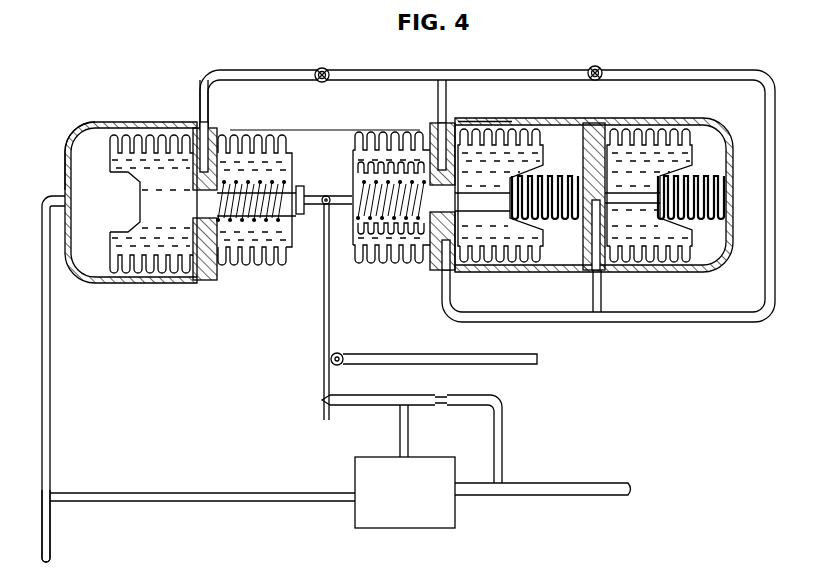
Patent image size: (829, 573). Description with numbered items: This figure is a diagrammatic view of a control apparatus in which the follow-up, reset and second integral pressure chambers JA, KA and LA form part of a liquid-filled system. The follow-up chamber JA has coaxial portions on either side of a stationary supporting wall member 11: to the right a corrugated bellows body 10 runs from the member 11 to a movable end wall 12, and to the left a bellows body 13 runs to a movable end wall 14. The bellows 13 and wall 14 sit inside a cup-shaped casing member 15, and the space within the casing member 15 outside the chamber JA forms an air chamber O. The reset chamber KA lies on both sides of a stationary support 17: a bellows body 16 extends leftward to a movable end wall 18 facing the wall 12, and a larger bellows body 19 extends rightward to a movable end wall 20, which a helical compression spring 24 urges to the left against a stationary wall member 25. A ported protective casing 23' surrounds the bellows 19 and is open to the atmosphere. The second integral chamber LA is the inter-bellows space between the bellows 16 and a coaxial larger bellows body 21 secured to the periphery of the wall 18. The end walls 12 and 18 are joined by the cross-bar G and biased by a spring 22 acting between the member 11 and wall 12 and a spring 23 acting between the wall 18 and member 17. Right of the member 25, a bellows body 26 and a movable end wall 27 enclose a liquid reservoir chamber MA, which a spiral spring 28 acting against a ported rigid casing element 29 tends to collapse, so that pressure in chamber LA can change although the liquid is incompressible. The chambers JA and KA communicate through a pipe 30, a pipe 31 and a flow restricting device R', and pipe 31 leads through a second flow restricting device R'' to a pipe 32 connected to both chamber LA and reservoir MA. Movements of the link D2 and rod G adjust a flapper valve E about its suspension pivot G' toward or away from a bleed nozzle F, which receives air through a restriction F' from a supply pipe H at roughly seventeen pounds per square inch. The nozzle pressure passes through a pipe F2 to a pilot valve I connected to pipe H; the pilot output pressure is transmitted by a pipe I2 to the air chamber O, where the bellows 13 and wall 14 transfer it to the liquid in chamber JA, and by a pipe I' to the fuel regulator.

The expansible air chamber O is at (78, 170).
The pipe 30 is at (258, 72).
The flow restricting device R' is at (334, 64).
The pipe 31 is at (404, 75).
The flow restricting device R'' is at (600, 61).
The pipe 32 is at (656, 72).
The follow-up expansible pressure chamber JA is at (240, 138).
The corrugated tubular bellows body 21 is at (372, 135).
The reset expansible pressure chamber KA is at (386, 160).
The protective casing 23' is at (487, 108).
The corrugated tubular bellows body 19 is at (524, 128).
The stationary wall member 25 is at (590, 122).
The reservoir chamber MA is at (640, 152).
The rigid casing element 29 is at (708, 120).
The movable end wall 12 is at (300, 186).
The corrugated tubular bellows body 16 is at (356, 148).
The suspension pivot G' is at (318, 178).
The movable end wall 18 is at (356, 180).
The movable end wall 14 is at (140, 202).
The cross-bar G is at (326, 214).
The movable end wall 20 is at (510, 203).
The spring 24 is at (550, 178).
The spiral spring 28 is at (696, 178).
The movable end wall 27 is at (660, 197).
The bias spring 23 is at (377, 236).
The cup-shaped casing member 15 is at (92, 284).
The corrugated tubular bellows body 13 is at (136, 273).
The stationary supporting wall member 11 is at (208, 278).
The corrugated tubular bellows body 10 is at (236, 265).
The bias spring 22 is at (268, 263).
The second integral expansible pressure chamber LA is at (386, 270).
The stationary support wall member 17 is at (436, 275).
The tubular bellows body 26 is at (638, 262).
The flapper valve E is at (324, 349).
The link D2 is at (414, 359).
The bleed nozzle F is at (384, 389).
The restriction F' is at (474, 428).
The pipe F2 is at (408, 431).
The supply pipe H is at (543, 478).
The pilot valve I is at (387, 497).
The pipe I2 is at (50, 392).
The pipe I' is at (198, 526).